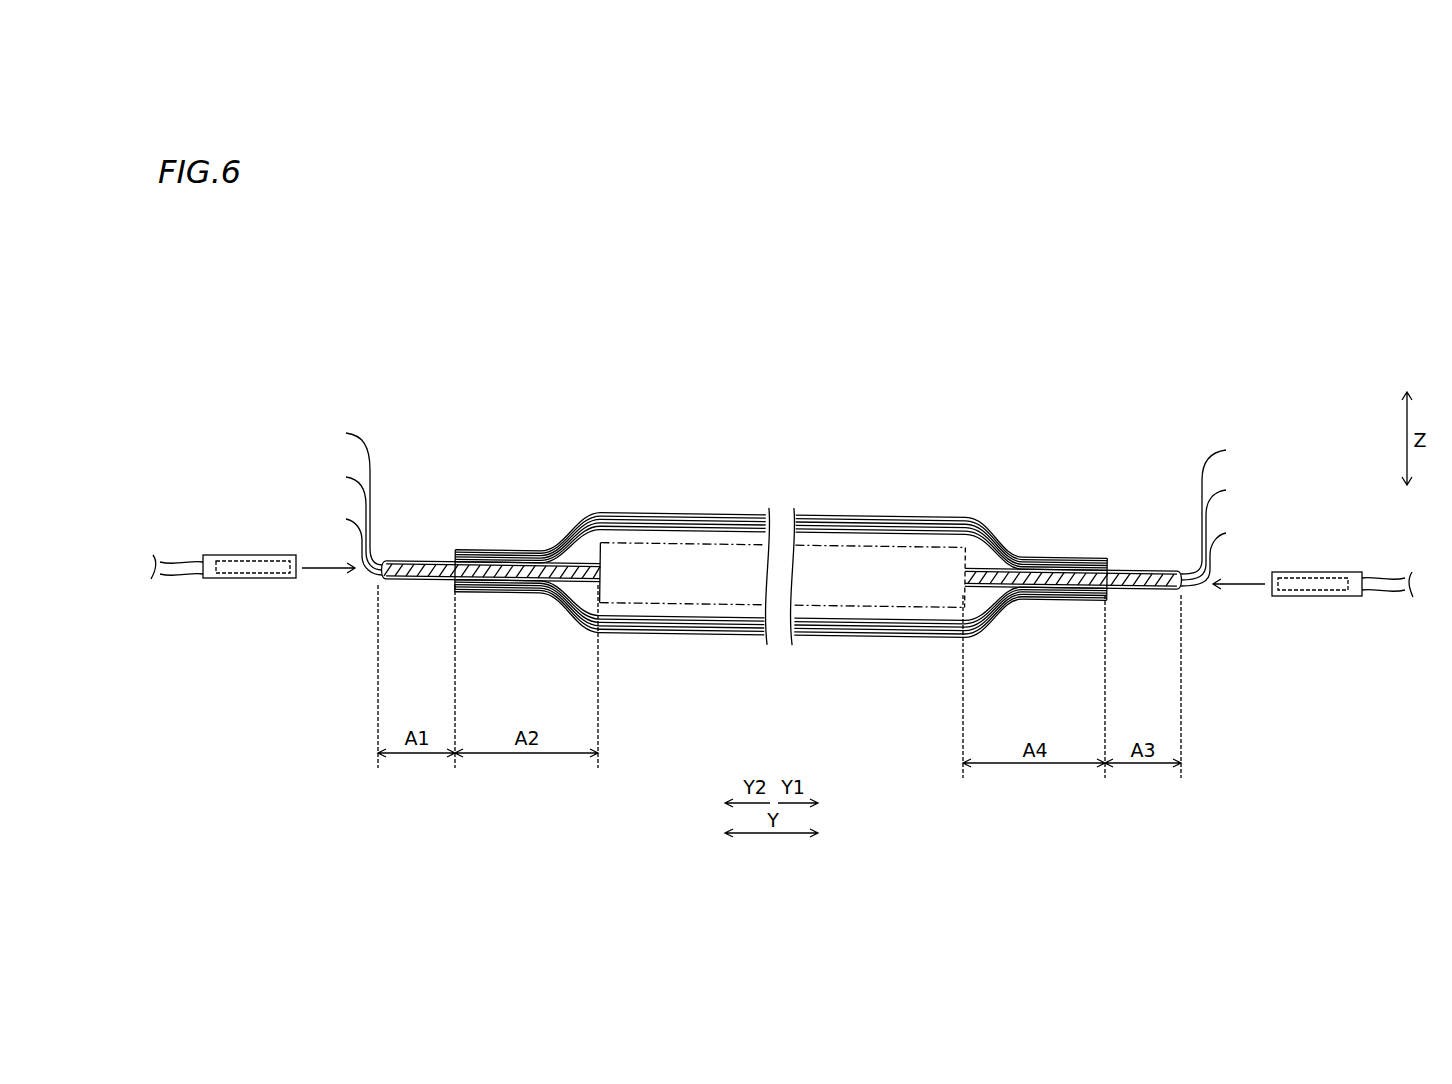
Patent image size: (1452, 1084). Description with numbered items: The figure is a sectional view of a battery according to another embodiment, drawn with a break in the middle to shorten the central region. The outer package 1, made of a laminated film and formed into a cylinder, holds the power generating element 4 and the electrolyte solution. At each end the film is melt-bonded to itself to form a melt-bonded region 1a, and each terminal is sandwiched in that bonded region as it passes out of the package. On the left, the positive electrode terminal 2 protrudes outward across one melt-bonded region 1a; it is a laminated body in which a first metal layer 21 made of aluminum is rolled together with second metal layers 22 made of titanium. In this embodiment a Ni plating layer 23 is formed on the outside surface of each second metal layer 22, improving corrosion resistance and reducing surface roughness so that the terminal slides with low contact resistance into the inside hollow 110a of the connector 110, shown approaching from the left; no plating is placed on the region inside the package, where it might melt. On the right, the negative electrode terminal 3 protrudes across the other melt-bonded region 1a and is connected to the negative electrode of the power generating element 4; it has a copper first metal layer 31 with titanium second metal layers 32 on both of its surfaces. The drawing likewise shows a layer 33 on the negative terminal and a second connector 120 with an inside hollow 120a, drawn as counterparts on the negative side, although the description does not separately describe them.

The outer package 1 is at (872, 513).
The melt-bonded region 1a is at (488, 550).
The positive electrode terminal 2 is at (335, 497).
The first metal layer 21 is at (318, 545).
The second metal layers 22 is at (348, 497).
The Ni plating layer 23 is at (415, 561).
The negative electrode terminal 3 is at (1230, 508).
The first metal layer 31 is at (1218, 528).
The second metal layers 32 is at (1218, 511).
The right conductor core 33 is at (1150, 572).
The power generating element 4 is at (850, 606).
The connector 110 is at (253, 587).
The inside hollow 110a is at (232, 560).
The second connector 120 is at (1313, 595).
The second connector terminal 120a is at (1296, 572).